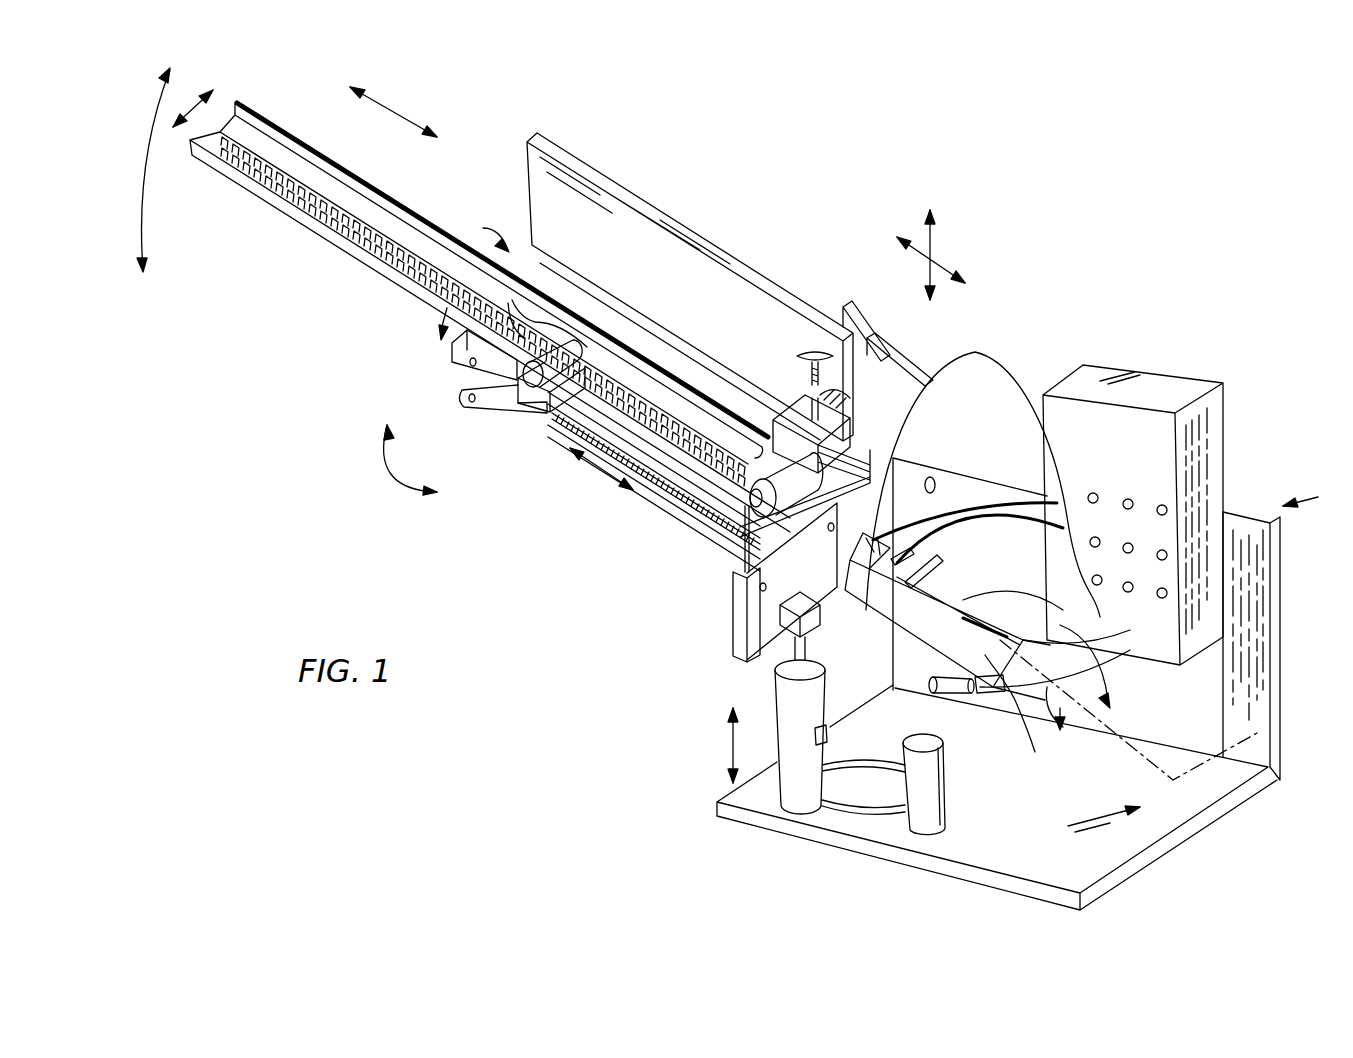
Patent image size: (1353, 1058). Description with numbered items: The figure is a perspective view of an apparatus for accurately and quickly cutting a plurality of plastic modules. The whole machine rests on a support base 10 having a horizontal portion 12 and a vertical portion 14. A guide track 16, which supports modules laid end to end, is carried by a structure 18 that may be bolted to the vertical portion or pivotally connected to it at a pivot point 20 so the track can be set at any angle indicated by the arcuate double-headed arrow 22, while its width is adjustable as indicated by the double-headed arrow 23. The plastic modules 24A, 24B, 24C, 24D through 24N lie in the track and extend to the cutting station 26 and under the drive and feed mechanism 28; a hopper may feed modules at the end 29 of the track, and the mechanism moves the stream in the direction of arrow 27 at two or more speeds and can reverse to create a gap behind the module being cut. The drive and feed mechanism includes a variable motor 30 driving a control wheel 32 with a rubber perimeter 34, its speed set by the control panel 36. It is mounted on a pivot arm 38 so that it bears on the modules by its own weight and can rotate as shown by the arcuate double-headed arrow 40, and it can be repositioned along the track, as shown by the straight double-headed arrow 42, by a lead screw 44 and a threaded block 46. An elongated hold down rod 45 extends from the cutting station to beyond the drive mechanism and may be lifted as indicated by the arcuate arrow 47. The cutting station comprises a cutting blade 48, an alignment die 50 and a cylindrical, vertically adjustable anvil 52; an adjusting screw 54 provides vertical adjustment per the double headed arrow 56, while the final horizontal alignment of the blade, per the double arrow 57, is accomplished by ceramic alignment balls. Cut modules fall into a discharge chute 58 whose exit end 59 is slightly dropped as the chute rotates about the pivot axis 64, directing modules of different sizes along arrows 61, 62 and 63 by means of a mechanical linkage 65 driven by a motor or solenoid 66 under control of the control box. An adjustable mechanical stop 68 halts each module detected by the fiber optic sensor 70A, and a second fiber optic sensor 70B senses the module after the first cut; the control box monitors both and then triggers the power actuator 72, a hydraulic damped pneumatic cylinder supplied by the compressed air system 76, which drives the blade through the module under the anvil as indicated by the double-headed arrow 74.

The support base 10 is at (1315, 493).
The horizontal portion 12 is at (1205, 810).
The vertical portion 14 is at (1265, 700).
The guide track 16 is at (420, 235).
The structure 18 is at (553, 160).
The pivot point 20 is at (937, 487).
The arcuate double-headed arrow 22 is at (140, 230).
The double-headed arrow 23 is at (197, 105).
The plastic module 24A is at (242, 172).
The plastic module 24B is at (307, 218).
The plastic module 24C is at (405, 268).
The plastic module 24D is at (452, 342).
The plastic module 24N is at (662, 530).
The cutting station 26 is at (735, 565).
The arrow 27 is at (403, 120).
The drive and feed mechanism 28 is at (555, 420).
The end 29 is at (245, 100).
The variable motor 30 is at (602, 340).
The control wheel 32 is at (578, 330).
The rubber perimeter 34 is at (592, 358).
The control panel 36 is at (1228, 425).
The pivot arm 38 is at (500, 412).
The arcuate double-headed arrow 40 is at (412, 485).
The straight double-headed arrow 42 is at (602, 480).
The lead screw 44 is at (632, 500).
The hold down rod 45 is at (672, 410).
The threaded block 46 is at (452, 380).
The arcuate arrow 47 is at (489, 227).
The cutting blade 48 is at (735, 550).
The alignment die 50 is at (722, 525).
The anvil 52 is at (860, 445).
The adjusting screw 54 is at (815, 345).
The double headed arrow 56 is at (940, 240).
The double arrow 57 is at (950, 270).
The discharge chute 58 is at (872, 600).
The exit end 59 is at (1013, 648).
The arrow 61 is at (990, 695).
The arrow 62 is at (1064, 730).
The arrow 63 is at (1118, 692).
The pivot axis 64 is at (1270, 742).
The mechanical linkage 65 is at (1020, 717).
The motor or solenoid 66 is at (933, 692).
The mechanical stop 68 is at (940, 565).
The fiber optic sensor 70A is at (1030, 533).
The fiber optic sensor 70B is at (975, 470).
The power actuator 72 is at (776, 692).
The double-headed arrow 74 is at (725, 742).
The compressed air system 76 is at (945, 790).